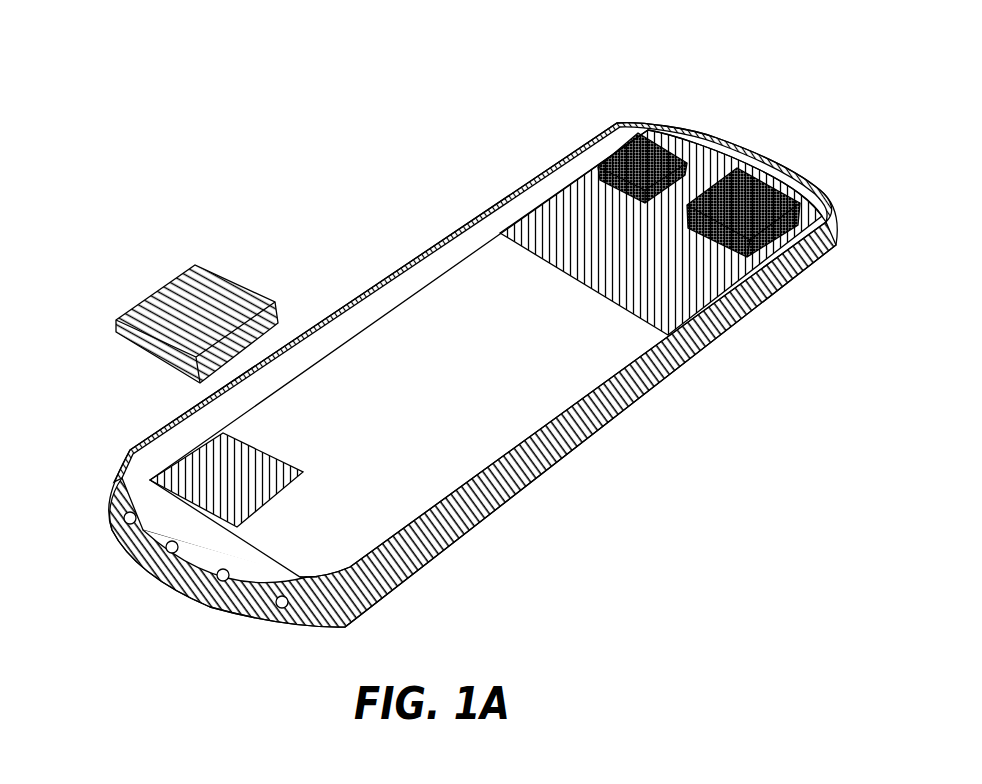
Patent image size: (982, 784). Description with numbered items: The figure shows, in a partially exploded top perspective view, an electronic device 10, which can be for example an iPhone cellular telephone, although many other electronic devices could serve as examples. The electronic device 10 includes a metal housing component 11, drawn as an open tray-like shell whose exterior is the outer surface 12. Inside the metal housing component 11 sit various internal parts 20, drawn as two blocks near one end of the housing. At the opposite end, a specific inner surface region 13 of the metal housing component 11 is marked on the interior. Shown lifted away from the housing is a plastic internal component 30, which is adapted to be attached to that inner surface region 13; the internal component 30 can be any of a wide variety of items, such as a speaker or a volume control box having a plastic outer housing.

The electronic device 10 is at (267, 81).
The metal housing component 11 is at (464, 380).
The outer surface 12 is at (571, 483).
The inner surface region 13 is at (200, 477).
The internal parts 20 is at (727, 172).
The plastic internal component 30 is at (160, 292).